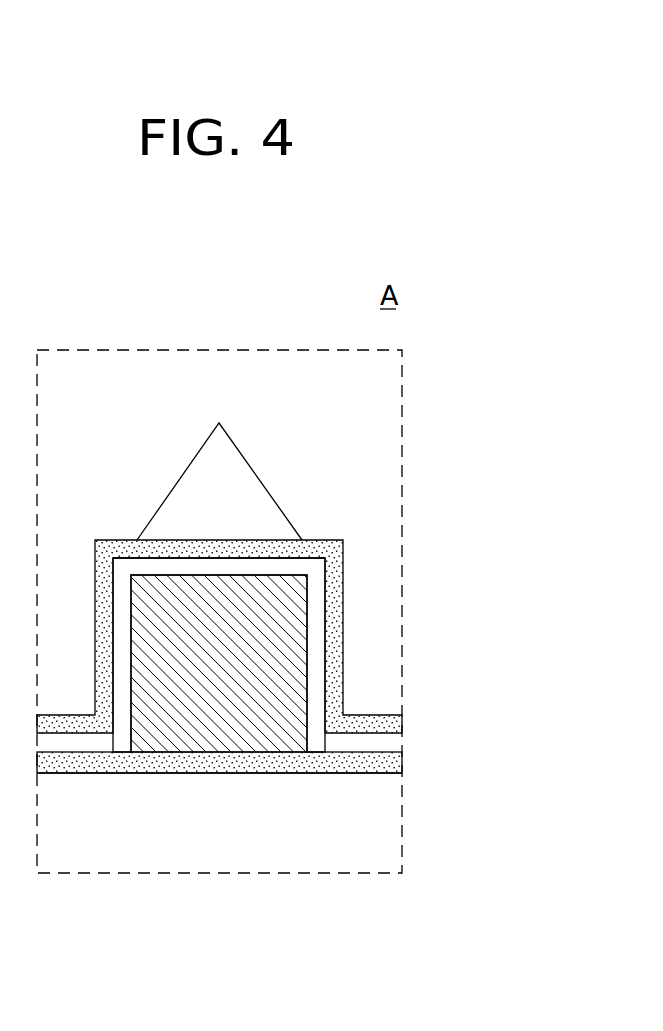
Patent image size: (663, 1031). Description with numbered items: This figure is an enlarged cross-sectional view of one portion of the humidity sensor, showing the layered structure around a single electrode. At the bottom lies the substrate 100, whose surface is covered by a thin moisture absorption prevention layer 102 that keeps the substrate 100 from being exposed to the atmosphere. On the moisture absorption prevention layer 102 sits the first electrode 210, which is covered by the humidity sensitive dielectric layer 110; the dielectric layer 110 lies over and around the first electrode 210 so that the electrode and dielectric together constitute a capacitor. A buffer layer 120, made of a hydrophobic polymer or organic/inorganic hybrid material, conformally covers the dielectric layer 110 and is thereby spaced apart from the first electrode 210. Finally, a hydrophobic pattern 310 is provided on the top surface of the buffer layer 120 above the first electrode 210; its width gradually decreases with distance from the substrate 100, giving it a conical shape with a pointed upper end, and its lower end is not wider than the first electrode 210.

The substrate 100 is at (388, 820).
The moisture absorption prevention layer 102 is at (390, 760).
The dielectric layer 110 is at (315, 647).
The buffer layer 120 is at (335, 610).
The first electrode 210 is at (288, 683).
The hydrophobic pattern 310 is at (252, 500).